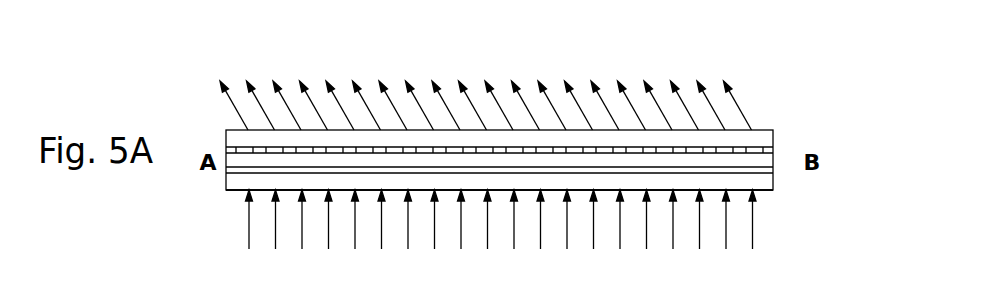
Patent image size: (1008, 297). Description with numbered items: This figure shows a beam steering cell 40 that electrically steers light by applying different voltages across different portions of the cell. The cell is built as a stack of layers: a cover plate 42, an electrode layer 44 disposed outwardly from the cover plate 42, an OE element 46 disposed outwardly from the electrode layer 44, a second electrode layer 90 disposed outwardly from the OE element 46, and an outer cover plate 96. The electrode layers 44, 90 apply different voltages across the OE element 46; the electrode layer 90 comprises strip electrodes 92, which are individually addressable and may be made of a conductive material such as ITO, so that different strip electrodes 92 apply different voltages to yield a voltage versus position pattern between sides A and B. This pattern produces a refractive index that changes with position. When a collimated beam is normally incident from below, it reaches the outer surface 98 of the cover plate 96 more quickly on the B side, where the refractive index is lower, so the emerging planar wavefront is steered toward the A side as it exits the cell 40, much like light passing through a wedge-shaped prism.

The beam steering cell 40 is at (768, 64).
The cover plate 42 is at (762, 192).
The electrode layer 44 is at (775, 170).
The OE element 46 is at (777, 162).
The electrode layer 90 is at (778, 150).
The strip electrodes 92 is at (777, 149).
The cover plate 96 is at (776, 148).
The outer surface 98 is at (488, 130).